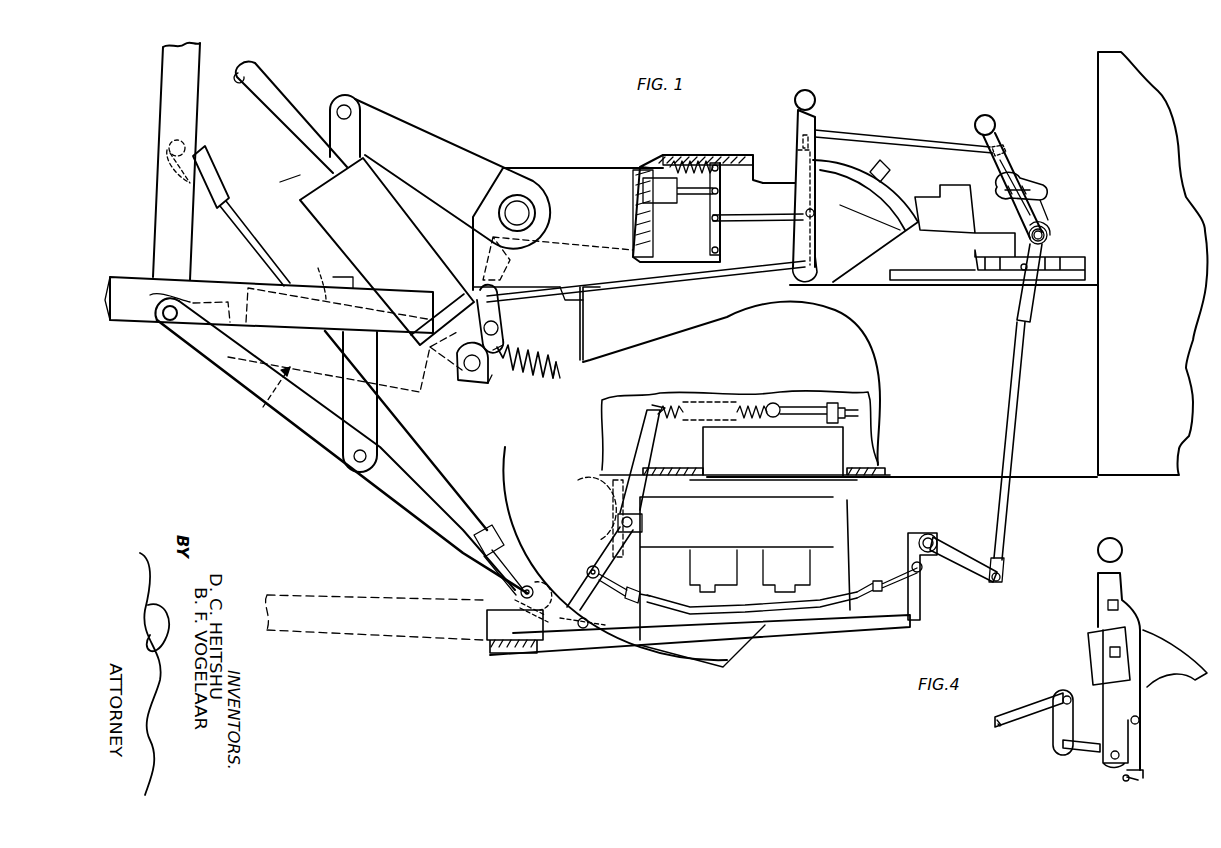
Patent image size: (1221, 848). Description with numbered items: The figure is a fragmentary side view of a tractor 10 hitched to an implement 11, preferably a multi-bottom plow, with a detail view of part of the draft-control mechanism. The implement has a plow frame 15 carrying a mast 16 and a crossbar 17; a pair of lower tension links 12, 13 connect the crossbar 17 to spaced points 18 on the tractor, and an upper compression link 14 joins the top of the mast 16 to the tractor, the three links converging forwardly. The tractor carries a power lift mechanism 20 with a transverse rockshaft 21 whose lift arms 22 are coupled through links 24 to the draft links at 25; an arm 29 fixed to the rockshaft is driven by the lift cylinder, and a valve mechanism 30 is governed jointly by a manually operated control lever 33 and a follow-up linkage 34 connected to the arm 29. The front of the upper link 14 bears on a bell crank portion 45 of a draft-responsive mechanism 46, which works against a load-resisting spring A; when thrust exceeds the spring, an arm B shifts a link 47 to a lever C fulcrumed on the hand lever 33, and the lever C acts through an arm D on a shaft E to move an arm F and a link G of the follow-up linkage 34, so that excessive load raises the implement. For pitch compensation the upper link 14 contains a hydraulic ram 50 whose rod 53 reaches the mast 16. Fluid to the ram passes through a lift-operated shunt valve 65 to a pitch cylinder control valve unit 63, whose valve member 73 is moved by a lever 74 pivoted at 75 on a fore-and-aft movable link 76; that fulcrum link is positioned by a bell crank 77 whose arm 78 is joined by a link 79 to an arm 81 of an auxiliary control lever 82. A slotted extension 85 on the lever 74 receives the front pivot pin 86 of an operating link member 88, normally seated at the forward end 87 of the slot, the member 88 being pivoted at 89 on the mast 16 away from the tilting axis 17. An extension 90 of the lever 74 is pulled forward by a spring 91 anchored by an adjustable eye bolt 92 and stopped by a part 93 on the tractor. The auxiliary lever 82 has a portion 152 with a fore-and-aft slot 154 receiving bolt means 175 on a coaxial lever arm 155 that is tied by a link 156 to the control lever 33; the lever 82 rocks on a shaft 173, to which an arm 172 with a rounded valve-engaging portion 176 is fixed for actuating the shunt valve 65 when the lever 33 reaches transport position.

In FIG. 1, the tractor 10 is at (1085, 70).
In FIG. 1, the implement 11 is at (140, 340).
In FIG. 1, the lower tension link 12 is at (222, 360).
In FIG. 1, the lower tension link 13 is at (313, 440).
In FIG. 1, the upper compression link 14 is at (288, 93).
In FIG. 1, the plow frame 15 is at (275, 303).
In FIG. 1, the mast 16 is at (201, 60).
In FIG. 1, the crossbar 17 is at (178, 305).
In FIG. 1, the forward link connection 18 is at (597, 637).
In FIG. 1, the power lift mechanism 20 is at (588, 165).
In FIG. 1, the rockshaft 21 is at (520, 205).
In FIG. 1, the lift arm 22 is at (465, 142).
In FIG. 1, the link 24 is at (363, 112).
In FIG. 1, the pivotal connection 25 is at (358, 465).
In FIG. 1, the arm 29 is at (512, 268).
In FIG. 1, the valve mechanism 30 is at (645, 180).
In FIG. 1, the manually operated control lever 33 is at (818, 104).
In FIG. 4, the manually operated control lever 33 is at (1095, 597).
In FIG. 1, the follow-up linkage 34 is at (730, 228).
In FIG. 4, the follow-up linkage 34 is at (1030, 697).
In FIG. 1, the bell crank portion 45 is at (462, 370).
In FIG. 1, the load- or draft-responsive mechanism 46 is at (482, 385).
In FIG. 1, the link 47 is at (628, 283).
In FIG. 4, the link 47 is at (1143, 775).
In FIG. 1, the hydraulic ram 50 is at (338, 250).
In FIG. 1, the rod 53 is at (298, 152).
In FIG. 1, the pitch cylinder control valve unit 63 is at (848, 507).
In FIG. 1, the lift-operated shunt valve 65 is at (940, 183).
In FIG. 1, the valve member 73 is at (644, 522).
In FIG. 1, the lever 74 is at (590, 500).
In FIG. 1, the fulcrum pivot 75 is at (590, 568).
In FIG. 1, the fore-and-aft movable link 76 is at (770, 615).
In FIG. 1, the bell crank 77 is at (958, 548).
In FIG. 1, the arm 78 is at (968, 565).
In FIG. 1, the link 79 is at (1012, 410).
In FIG. 1, the arm 81 is at (1022, 250).
In FIG. 1, the auxiliary manually operated control lever 82 is at (982, 108).
In FIG. 1, the slotted extension 85 is at (548, 638).
In FIG. 1, the front end pivot pin 86 is at (520, 592).
In FIG. 1, the forward end of slot 87 is at (545, 600).
In FIG. 1, the pitch cylinder control valve operating link member 88 is at (433, 470).
In FIG. 1, the pivotal connection 89 is at (186, 142).
In FIG. 1, the extension 90 is at (650, 446).
In FIG. 1, the spring 91 is at (752, 402).
In FIG. 1, the adjustable eye bolt 92 is at (803, 408).
In FIG. 1, the stop part 93 is at (685, 470).
In FIG. 1, the lever portion 152 is at (1030, 170).
In FIG. 1, the fore-and-aft slot 154 is at (1040, 180).
In FIG. 1, the lever arm 155 is at (1000, 145).
In FIG. 1, the link 156 is at (900, 140).
In FIG. 1, the arm 172 is at (1050, 225).
In FIG. 1, the shaft 173 is at (1047, 237).
In FIG. 1, the bolt means 175 is at (1005, 183).
In FIG. 1, the rounded valve-engaging portion 176 is at (1048, 210).
In FIG. 1, the load-resisting spring A is at (538, 390).
In FIG. 1, the arm B is at (505, 322).
In FIG. 1, the lever C is at (818, 195).
In FIG. 4, the lever C is at (1143, 705).
In FIG. 4, the arm D is at (1120, 742).
In FIG. 4, the shaft E is at (1080, 748).
In FIG. 4, the arm F is at (1058, 732).
In FIG. 1, the link G is at (738, 215).
In FIG. 4, the link G is at (1010, 727).